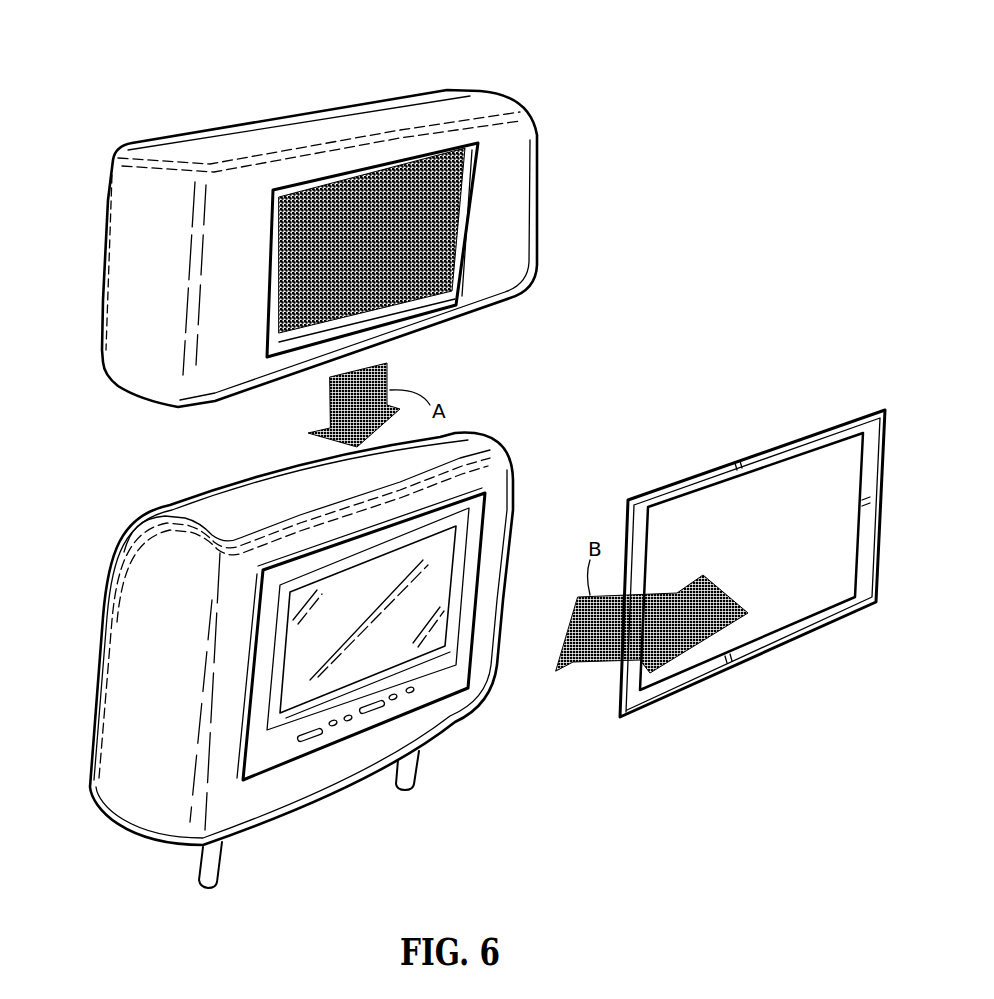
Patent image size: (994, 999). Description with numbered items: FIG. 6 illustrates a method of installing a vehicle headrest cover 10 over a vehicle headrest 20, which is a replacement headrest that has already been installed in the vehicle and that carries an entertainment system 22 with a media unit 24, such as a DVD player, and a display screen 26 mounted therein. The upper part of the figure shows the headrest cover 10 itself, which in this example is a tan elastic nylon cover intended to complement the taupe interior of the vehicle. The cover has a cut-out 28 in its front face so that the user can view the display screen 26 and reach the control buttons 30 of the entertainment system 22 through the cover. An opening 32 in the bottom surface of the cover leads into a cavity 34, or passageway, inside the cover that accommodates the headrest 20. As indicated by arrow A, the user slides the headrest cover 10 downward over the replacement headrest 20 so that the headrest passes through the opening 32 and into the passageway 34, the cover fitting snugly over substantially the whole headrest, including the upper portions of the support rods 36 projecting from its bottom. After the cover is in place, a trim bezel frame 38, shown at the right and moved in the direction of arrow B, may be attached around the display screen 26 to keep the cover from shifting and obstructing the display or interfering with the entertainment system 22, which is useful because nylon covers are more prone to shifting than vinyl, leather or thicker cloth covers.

The vehicle headrest cover 10 is at (391, 55).
The cut-out 28 is at (460, 148).
The opening 32 is at (423, 303).
The cavity 34 is at (437, 217).
The vehicle headrest 20 is at (106, 519).
The entertainment system 22 is at (512, 604).
The media unit 24 is at (466, 492).
The display screen 26 is at (420, 585).
The control buttons 30 is at (512, 688).
The support rods 36 is at (420, 778).
The trim bezel frame 38 is at (797, 424).